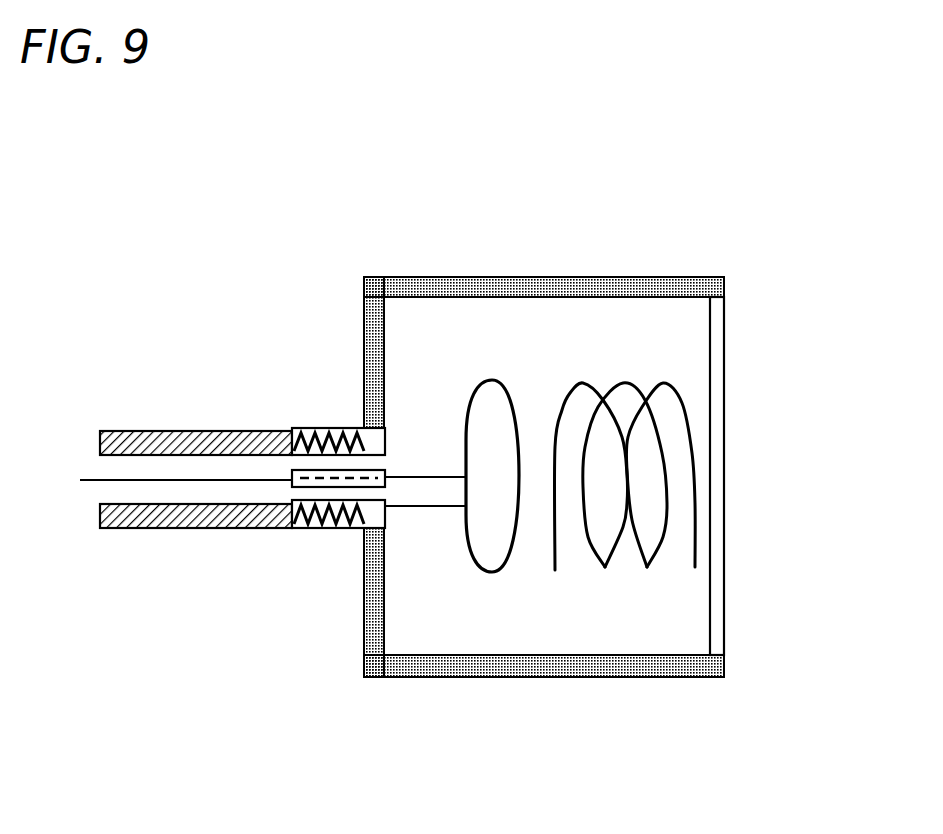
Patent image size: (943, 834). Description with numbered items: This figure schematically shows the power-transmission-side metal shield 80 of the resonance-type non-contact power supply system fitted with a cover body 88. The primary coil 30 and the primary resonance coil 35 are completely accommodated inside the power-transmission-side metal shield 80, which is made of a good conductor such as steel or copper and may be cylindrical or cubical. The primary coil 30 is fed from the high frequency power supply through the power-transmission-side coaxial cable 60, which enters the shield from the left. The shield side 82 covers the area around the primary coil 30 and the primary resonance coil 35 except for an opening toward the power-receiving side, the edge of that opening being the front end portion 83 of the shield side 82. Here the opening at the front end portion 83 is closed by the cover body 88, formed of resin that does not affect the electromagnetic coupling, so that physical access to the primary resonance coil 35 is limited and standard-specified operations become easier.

The primary coil 30 is at (468, 535).
The primary resonance coil 35 is at (608, 567).
The power-transmission-side coaxial cable 60 is at (210, 383).
The power-transmission-side metal shield 80 is at (594, 456).
The shield side 82 is at (542, 275).
The front end portion 83 is at (725, 667).
The cover body 88 is at (727, 443).